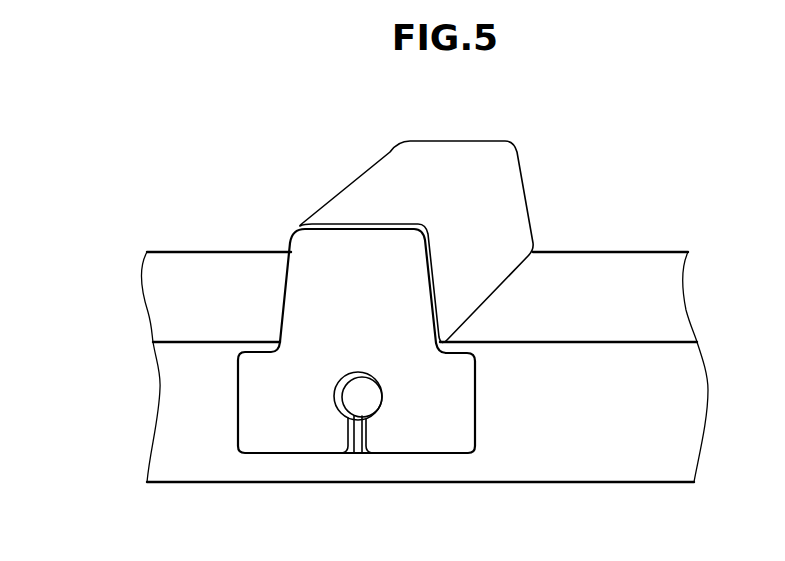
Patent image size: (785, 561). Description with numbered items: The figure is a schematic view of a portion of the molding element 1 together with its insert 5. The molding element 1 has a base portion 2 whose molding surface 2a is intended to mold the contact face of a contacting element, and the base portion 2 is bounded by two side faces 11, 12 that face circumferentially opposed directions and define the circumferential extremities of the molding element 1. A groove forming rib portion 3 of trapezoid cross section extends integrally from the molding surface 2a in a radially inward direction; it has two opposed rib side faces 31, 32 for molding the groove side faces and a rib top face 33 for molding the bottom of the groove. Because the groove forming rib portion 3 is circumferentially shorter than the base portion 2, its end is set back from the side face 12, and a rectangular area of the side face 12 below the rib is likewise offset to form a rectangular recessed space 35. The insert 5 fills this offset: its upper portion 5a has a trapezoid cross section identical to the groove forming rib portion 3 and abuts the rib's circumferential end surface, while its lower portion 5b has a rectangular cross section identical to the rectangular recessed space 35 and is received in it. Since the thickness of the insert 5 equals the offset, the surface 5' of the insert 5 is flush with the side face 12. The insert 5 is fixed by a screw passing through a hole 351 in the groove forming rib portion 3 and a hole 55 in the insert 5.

The molding element 1 is at (586, 130).
The base portion 2 is at (632, 251).
The molding surface 2a is at (199, 297).
The groove forming rib portion 3 is at (323, 205).
The insert 5 is at (255, 382).
The upper portion 5a is at (308, 297).
The lower portion 5b is at (267, 387).
The surface of the insert 5' is at (363, 298).
The side face 11 is at (684, 252).
The side face 12 is at (579, 424).
The rib side face 31 is at (381, 156).
The rib side face 32 is at (503, 232).
The rib top face 33 is at (447, 162).
The rectangular recessed space 35 is at (362, 455).
The hole in the insert 55 is at (355, 389).
The hole in the groove forming rib portion 351 is at (352, 418).